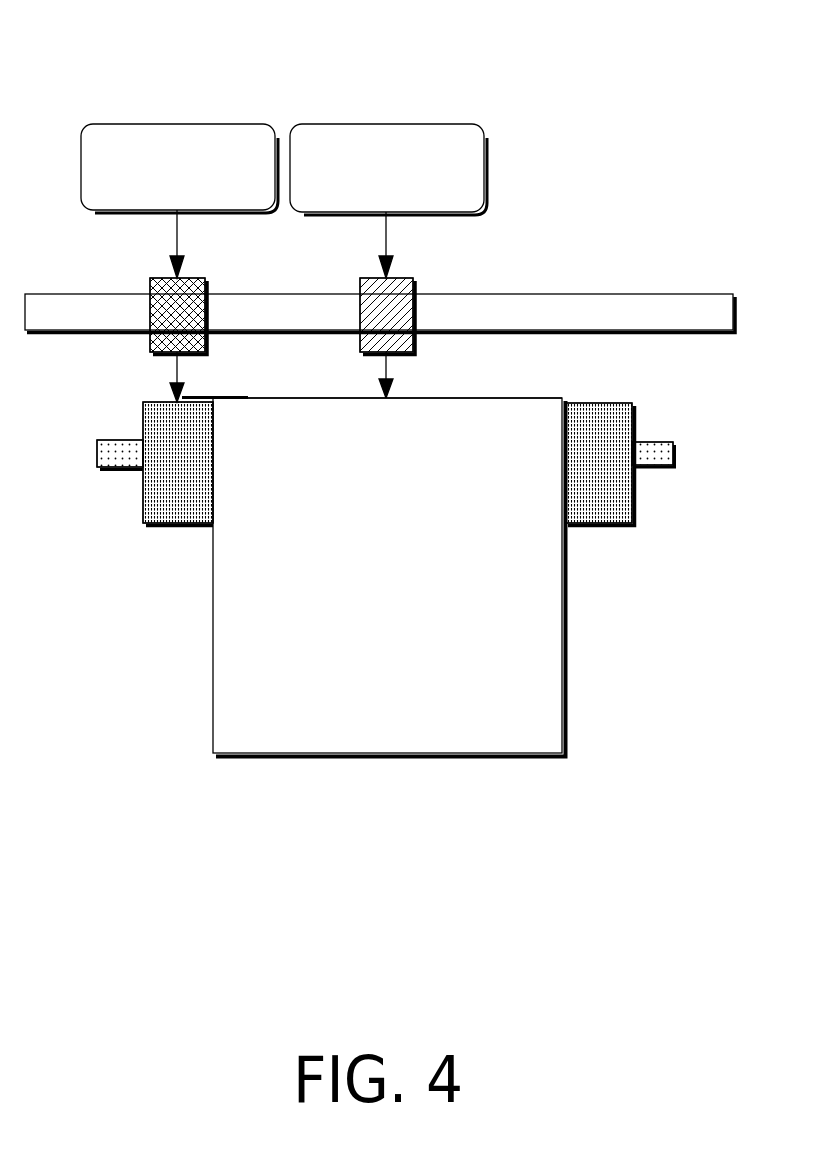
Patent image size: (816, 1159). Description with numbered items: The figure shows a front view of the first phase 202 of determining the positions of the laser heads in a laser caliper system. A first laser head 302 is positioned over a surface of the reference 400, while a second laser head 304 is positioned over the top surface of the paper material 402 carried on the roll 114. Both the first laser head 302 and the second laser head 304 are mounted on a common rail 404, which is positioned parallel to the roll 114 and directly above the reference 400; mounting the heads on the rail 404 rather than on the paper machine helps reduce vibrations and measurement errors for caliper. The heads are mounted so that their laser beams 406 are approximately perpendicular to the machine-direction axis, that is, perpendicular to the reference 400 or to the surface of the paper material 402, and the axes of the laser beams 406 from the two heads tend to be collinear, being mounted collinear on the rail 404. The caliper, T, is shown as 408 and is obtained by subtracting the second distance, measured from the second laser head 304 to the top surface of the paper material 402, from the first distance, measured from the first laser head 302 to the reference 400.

The first phase 202 is at (633, 53).
The first laser head 302 is at (194, 191).
The second laser head 304 is at (403, 200).
The rail 404 is at (652, 306).
The laser beams 406 is at (180, 363).
The reference 400 is at (176, 401).
The paper material 402 is at (388, 405).
The caliper 408 is at (199, 397).
The roll 114 is at (619, 435).